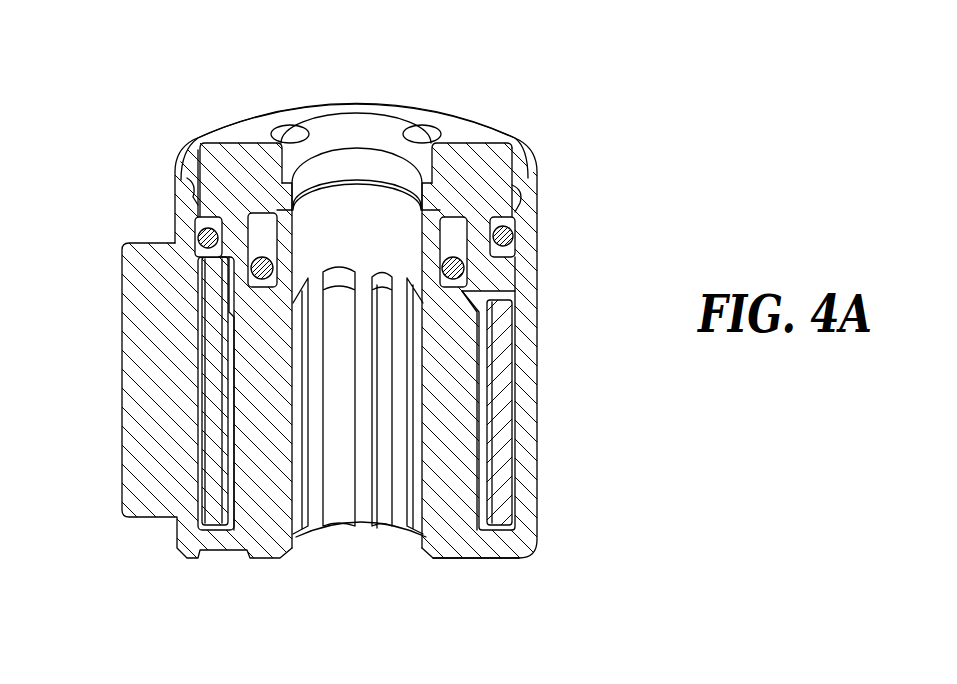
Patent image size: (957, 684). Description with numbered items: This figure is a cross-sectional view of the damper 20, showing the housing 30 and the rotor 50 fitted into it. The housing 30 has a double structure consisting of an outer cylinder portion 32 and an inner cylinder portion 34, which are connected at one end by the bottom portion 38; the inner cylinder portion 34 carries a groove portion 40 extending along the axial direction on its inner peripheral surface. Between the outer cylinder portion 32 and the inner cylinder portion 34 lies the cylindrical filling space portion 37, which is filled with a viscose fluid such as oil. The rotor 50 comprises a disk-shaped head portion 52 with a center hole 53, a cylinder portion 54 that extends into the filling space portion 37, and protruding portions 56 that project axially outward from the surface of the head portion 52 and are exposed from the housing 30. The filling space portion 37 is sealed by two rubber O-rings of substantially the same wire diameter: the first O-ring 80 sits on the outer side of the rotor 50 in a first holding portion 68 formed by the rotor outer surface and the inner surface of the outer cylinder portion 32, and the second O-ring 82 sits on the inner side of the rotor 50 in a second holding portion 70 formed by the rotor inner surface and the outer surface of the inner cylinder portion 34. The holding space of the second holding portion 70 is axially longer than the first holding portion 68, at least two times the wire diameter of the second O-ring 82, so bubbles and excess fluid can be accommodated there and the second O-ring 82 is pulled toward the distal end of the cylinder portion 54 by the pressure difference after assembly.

The damper 20 is at (412, 594).
The housing 30 is at (538, 480).
The outer cylinder portion 32 is at (528, 440).
The inner cylinder portion 34 is at (350, 210).
The filling space portion 37 is at (231, 400).
The bottom portion 38 is at (480, 559).
The groove portion 40 is at (342, 508).
The rotor 50 is at (503, 380).
The head portion 52 is at (385, 120).
The center hole 53 is at (363, 160).
The cylinder portion 54 is at (210, 469).
The protruding portions 56 is at (232, 150).
The first holding portion 68 is at (508, 160).
The second holding portion 70 is at (455, 212).
The first O-ring 80 is at (513, 237).
The second O-ring 82 is at (465, 268).